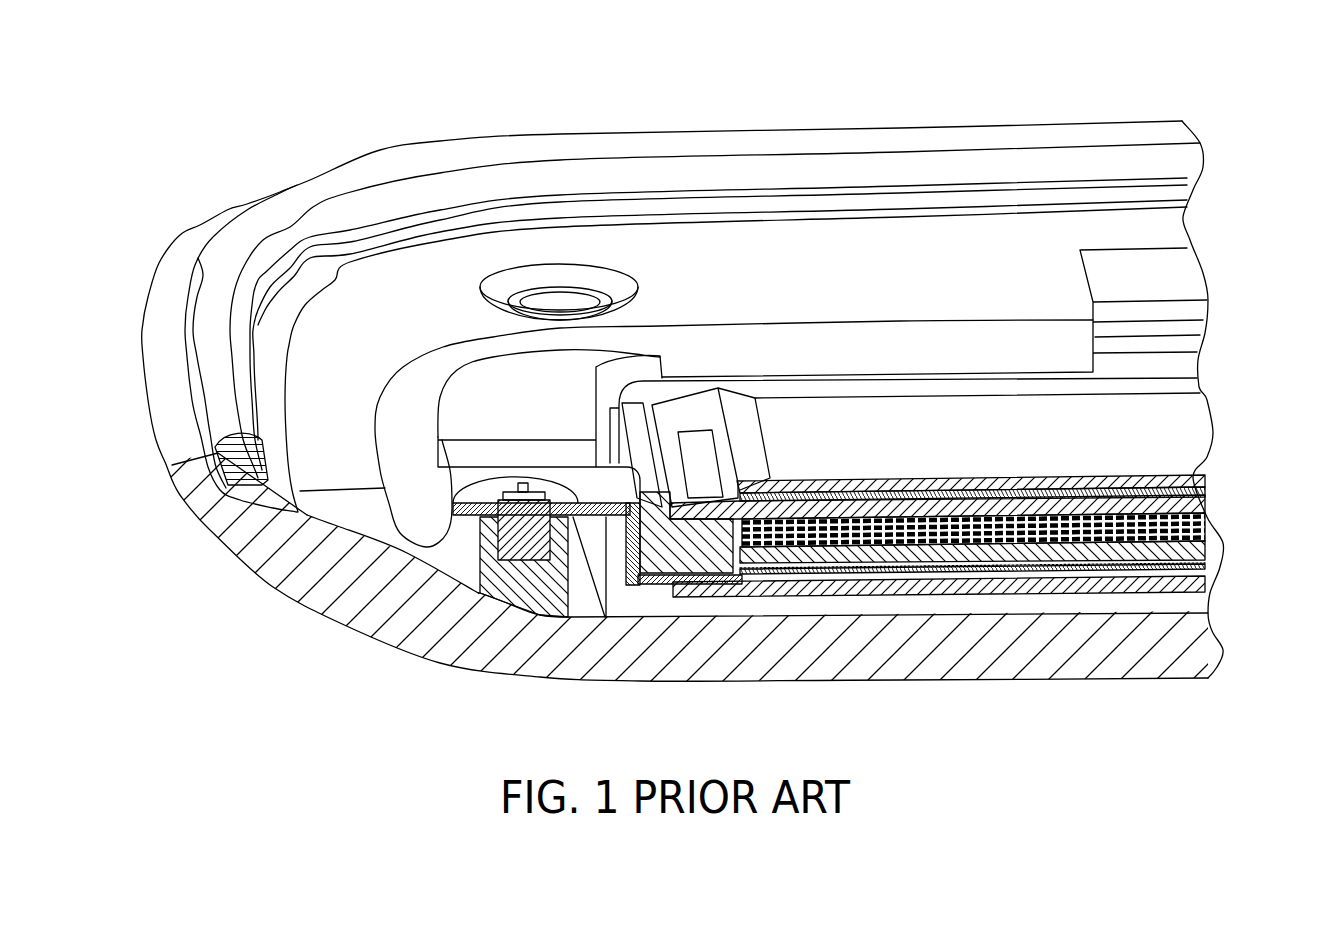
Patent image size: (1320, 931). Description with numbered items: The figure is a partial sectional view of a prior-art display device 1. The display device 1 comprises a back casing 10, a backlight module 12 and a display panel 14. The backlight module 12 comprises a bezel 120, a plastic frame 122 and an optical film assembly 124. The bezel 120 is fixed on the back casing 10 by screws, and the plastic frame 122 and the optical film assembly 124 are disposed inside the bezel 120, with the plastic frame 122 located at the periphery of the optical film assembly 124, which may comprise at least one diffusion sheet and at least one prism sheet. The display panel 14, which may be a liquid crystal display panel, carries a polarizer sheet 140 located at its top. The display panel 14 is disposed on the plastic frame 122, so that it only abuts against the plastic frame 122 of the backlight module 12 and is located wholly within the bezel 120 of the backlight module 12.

The display device 1 is at (1088, 92).
The back casing 10 is at (227, 210).
The backlight module 12 is at (1222, 567).
The display panel 14 is at (1217, 443).
The bezel 120 is at (650, 582).
The plastic frame 122 is at (686, 547).
The optical film assembly 124 is at (1223, 508).
The polarizer sheet 140 is at (835, 422).